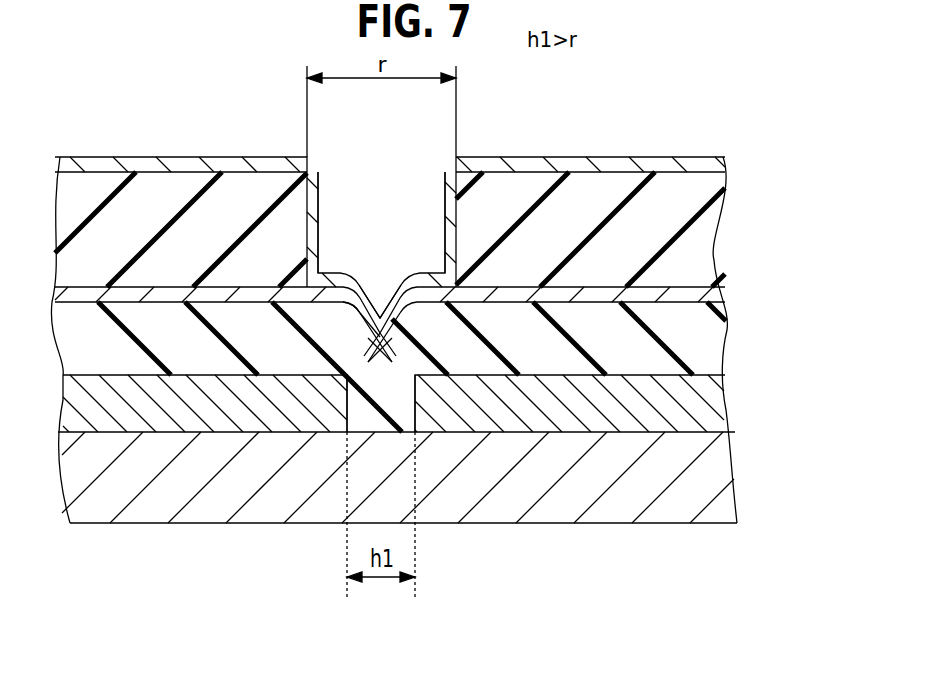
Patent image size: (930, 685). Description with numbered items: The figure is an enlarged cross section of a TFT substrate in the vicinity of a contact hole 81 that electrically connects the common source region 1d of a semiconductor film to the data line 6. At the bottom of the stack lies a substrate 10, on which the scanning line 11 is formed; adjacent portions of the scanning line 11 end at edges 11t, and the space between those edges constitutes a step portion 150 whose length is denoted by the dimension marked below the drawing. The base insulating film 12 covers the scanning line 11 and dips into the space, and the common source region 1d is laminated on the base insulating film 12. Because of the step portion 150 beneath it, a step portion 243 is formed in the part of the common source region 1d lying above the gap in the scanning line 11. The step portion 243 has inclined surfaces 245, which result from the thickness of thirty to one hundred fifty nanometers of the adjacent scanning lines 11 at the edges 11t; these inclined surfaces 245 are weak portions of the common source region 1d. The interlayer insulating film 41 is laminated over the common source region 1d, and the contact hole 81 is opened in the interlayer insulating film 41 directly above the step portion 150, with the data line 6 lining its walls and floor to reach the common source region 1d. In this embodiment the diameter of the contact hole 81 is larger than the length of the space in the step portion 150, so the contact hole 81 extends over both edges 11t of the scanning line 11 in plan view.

The data line 6 is at (722, 162).
The interlayer insulating film 41 is at (715, 220).
The common source region 1d is at (722, 293).
The base insulating film 12 is at (714, 331).
The scanning line 11 is at (720, 393).
The substrate 10 is at (718, 462).
The step portion 150 is at (360, 367).
The contact hole 81 is at (445, 210).
The inclined surfaces 245 is at (396, 291).
The step portion 243 is at (390, 363).
The edges 11t is at (415, 415).